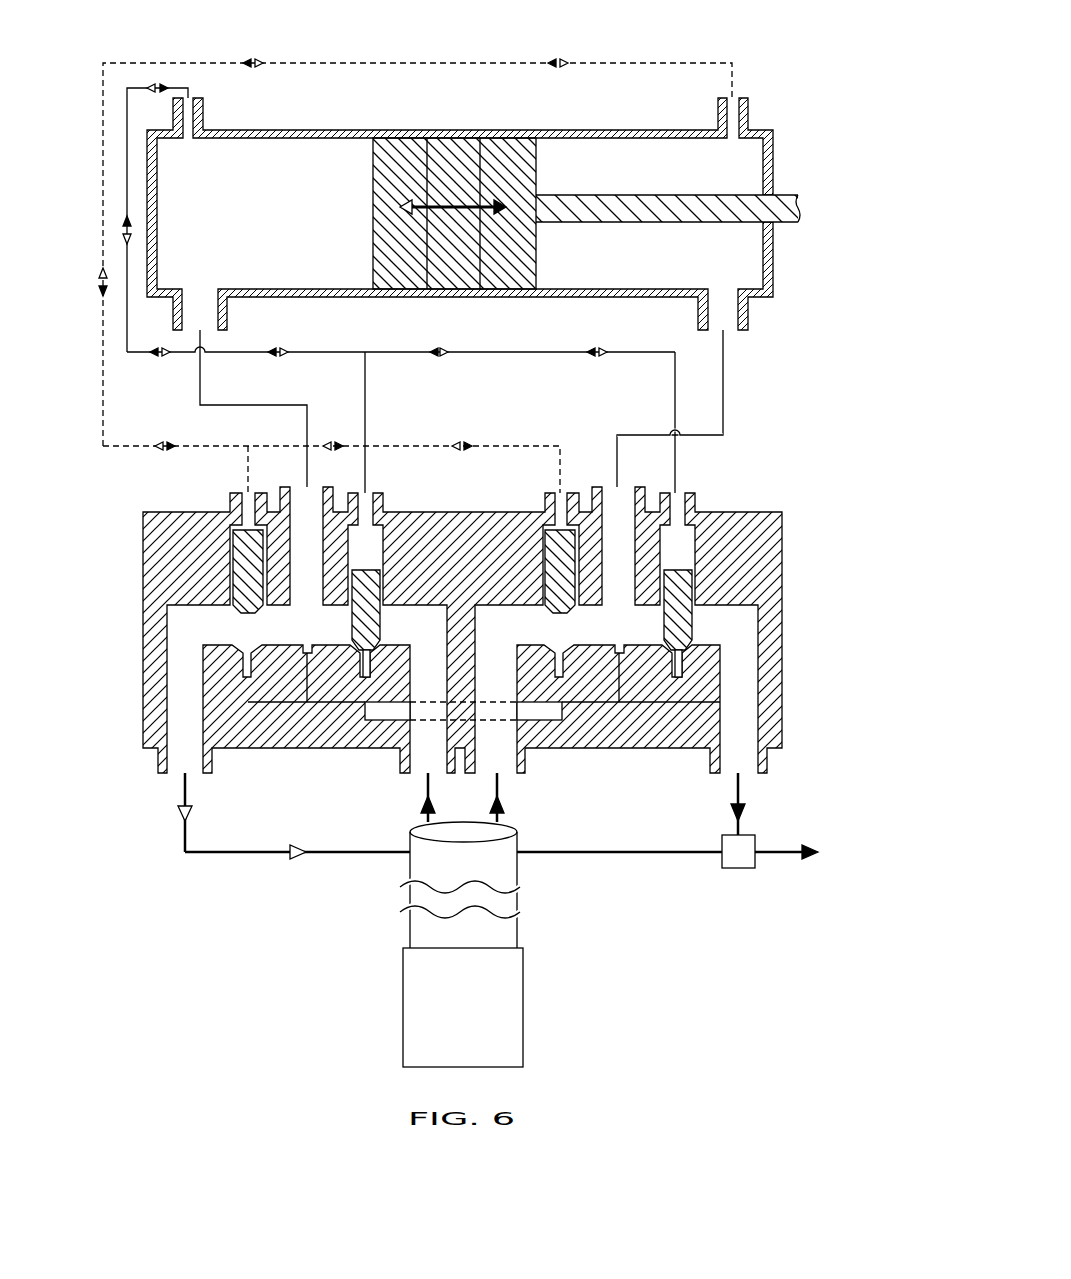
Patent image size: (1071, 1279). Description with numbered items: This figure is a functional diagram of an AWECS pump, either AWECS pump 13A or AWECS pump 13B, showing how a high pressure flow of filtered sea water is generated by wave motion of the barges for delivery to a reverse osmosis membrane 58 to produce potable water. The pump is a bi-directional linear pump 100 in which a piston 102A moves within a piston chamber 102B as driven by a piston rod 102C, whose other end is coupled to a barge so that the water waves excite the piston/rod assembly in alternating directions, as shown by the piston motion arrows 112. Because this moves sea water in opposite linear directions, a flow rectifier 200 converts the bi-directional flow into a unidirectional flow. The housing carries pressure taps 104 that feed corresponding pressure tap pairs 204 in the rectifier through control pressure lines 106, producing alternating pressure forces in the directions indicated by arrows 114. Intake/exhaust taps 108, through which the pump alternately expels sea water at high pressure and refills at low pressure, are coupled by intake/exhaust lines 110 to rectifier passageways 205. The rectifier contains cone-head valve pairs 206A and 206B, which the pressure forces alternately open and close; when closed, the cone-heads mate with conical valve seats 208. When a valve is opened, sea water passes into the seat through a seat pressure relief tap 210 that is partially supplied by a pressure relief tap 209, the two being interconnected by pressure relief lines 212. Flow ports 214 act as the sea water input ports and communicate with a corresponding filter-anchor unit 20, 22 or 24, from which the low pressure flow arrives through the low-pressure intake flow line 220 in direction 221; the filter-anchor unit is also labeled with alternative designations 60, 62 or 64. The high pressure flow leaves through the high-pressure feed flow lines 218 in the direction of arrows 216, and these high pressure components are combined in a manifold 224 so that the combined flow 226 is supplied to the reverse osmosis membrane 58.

The AWECS pump 13A is at (804, 34).
The AWECS pump 13B is at (813, 33).
The bi-directional linear pump 100 is at (502, 207).
The piston 102A is at (424, 213).
The piston chamber 102B is at (593, 139).
The piston rod 102C is at (782, 188).
The pressure taps 104 is at (203, 118).
The control pressure lines 106 is at (103, 132).
The intake/exhaust taps 108 is at (228, 307).
The intake/exhaust lines 110 is at (723, 343).
The piston motion arrows 112 is at (400, 205).
The pressure-force arrows 114 is at (124, 238).
The flow rectifier 200 is at (464, 633).
The pressure tap pairs 204 is at (232, 510).
The rectifier passageways 205 is at (303, 540).
The rectifier valve 206A is at (248, 576).
The rectifier valve 206B is at (380, 590).
The valve seats 208 is at (228, 645).
The pressure relief taps 209 is at (263, 703).
The seat pressure relief taps 210 is at (333, 697).
The pressure relief lines 212 is at (383, 707).
The flow ports 214 is at (162, 774).
The sea water flow direction arrows 216 is at (178, 814).
The high-pressure sea water feed flow line 218 is at (184, 853).
The low-pressure intake flow line 220 is at (497, 909).
The low pressure flow direction 221 is at (496, 810).
The manifold 224 is at (738, 853).
The combined flow 226 is at (778, 848).
The filter-anchor unit 20 is at (398, 1017).
The filter-anchor unit 22 is at (398, 1017).
The filter-anchor unit 24 is at (402, 1017).
The reverse osmosis membrane 58 is at (801, 948).
The pipe 60 is at (497, 909).
The pipe 62 is at (497, 909).
The pipe 64 is at (520, 942).